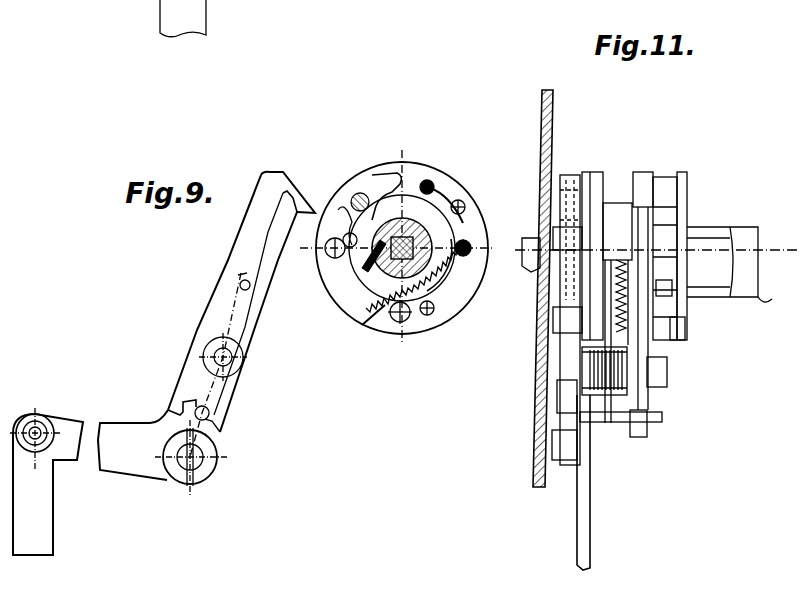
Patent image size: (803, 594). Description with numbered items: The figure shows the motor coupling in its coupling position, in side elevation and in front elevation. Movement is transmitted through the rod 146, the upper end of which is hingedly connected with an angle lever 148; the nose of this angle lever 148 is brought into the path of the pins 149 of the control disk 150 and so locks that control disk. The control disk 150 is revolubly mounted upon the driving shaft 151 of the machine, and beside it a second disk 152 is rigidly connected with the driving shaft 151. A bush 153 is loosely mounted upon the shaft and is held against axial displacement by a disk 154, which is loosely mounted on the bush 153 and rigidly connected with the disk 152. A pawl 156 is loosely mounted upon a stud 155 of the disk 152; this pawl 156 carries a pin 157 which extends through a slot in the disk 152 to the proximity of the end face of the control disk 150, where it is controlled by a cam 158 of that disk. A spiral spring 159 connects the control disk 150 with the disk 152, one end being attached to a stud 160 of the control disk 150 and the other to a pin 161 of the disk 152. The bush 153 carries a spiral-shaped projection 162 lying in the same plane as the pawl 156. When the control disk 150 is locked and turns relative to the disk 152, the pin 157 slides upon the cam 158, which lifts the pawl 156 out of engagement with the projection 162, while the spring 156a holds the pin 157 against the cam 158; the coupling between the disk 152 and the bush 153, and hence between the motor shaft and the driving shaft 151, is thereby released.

In FIG. 9, the rod 146 is at (20, 525).
In FIG. 11, the rod 146 is at (580, 535).
In FIG. 9, the angle lever 148 is at (153, 447).
In FIG. 11, the angle lever 148 is at (570, 397).
In FIG. 9, the pins 149 is at (400, 320).
In FIG. 11, the pins 149 is at (553, 320).
In FIG. 11, the control disk 150 is at (583, 173).
In FIG. 9, the driving shaft 151 is at (407, 183).
In FIG. 11, the driving shaft 151 is at (535, 262).
In FIG. 9, the second disk 152 is at (432, 317).
In FIG. 11, the second disk 152 is at (645, 178).
In FIG. 11, the bush 153 is at (710, 233).
In FIG. 11, the disk 154 is at (683, 190).
In FIG. 11, the stud 155 is at (688, 204).
In FIG. 9, the pawl 156 is at (360, 194).
In FIG. 11, the pawl 156 is at (665, 187).
In FIG. 9, the spring 156a is at (440, 205).
In FIG. 9, the pin 157 is at (333, 244).
In FIG. 11, the pin 157 is at (627, 237).
In FIG. 9, the cam 158 is at (437, 188).
In FIG. 9, the spiral spring 159 is at (466, 240).
In FIG. 11, the spiral spring 159 is at (650, 318).
In FIG. 11, the stud 160 is at (590, 210).
In FIG. 11, the pin 161 is at (632, 337).
In FIG. 9, the spiral-shaped projection 162 is at (365, 262).
In FIG. 11, the spiral-shaped projection 162 is at (660, 287).